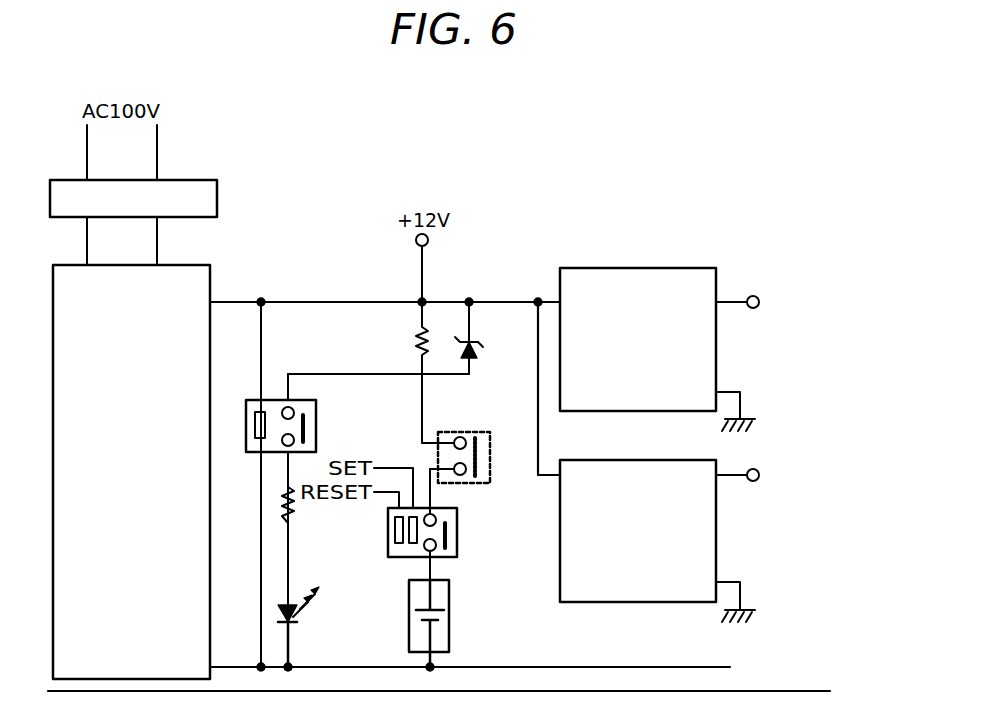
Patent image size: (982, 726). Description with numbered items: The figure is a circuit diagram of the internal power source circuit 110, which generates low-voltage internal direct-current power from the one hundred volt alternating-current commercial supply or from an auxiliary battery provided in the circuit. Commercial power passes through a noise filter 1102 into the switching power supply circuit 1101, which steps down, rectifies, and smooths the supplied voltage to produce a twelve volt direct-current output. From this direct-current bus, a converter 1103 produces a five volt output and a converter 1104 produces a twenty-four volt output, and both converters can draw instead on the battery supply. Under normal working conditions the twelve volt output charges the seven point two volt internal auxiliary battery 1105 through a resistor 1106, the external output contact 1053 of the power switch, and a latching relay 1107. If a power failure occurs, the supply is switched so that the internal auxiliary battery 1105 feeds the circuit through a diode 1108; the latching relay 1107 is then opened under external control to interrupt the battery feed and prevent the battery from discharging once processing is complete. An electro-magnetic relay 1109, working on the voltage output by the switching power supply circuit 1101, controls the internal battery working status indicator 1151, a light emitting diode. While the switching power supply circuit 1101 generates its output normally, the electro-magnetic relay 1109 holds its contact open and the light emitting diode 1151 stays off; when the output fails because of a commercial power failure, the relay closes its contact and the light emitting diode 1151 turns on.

The internal power source circuit 110 is at (358, 203).
The switching power supply circuit 1101 is at (210, 280).
The noise filter 1102 is at (217, 188).
The converter 1103 is at (660, 268).
The converter 1104 is at (660, 460).
The internal auxiliary battery 1105 is at (449, 590).
The resistor 1106 is at (418, 333).
The latching relay 1107 is at (457, 518).
The diode 1108 is at (475, 345).
The electro-magnetic relay 1109 is at (316, 410).
The external output contact 1053 is at (470, 432).
The internal battery working status indicator 1151 is at (300, 625).